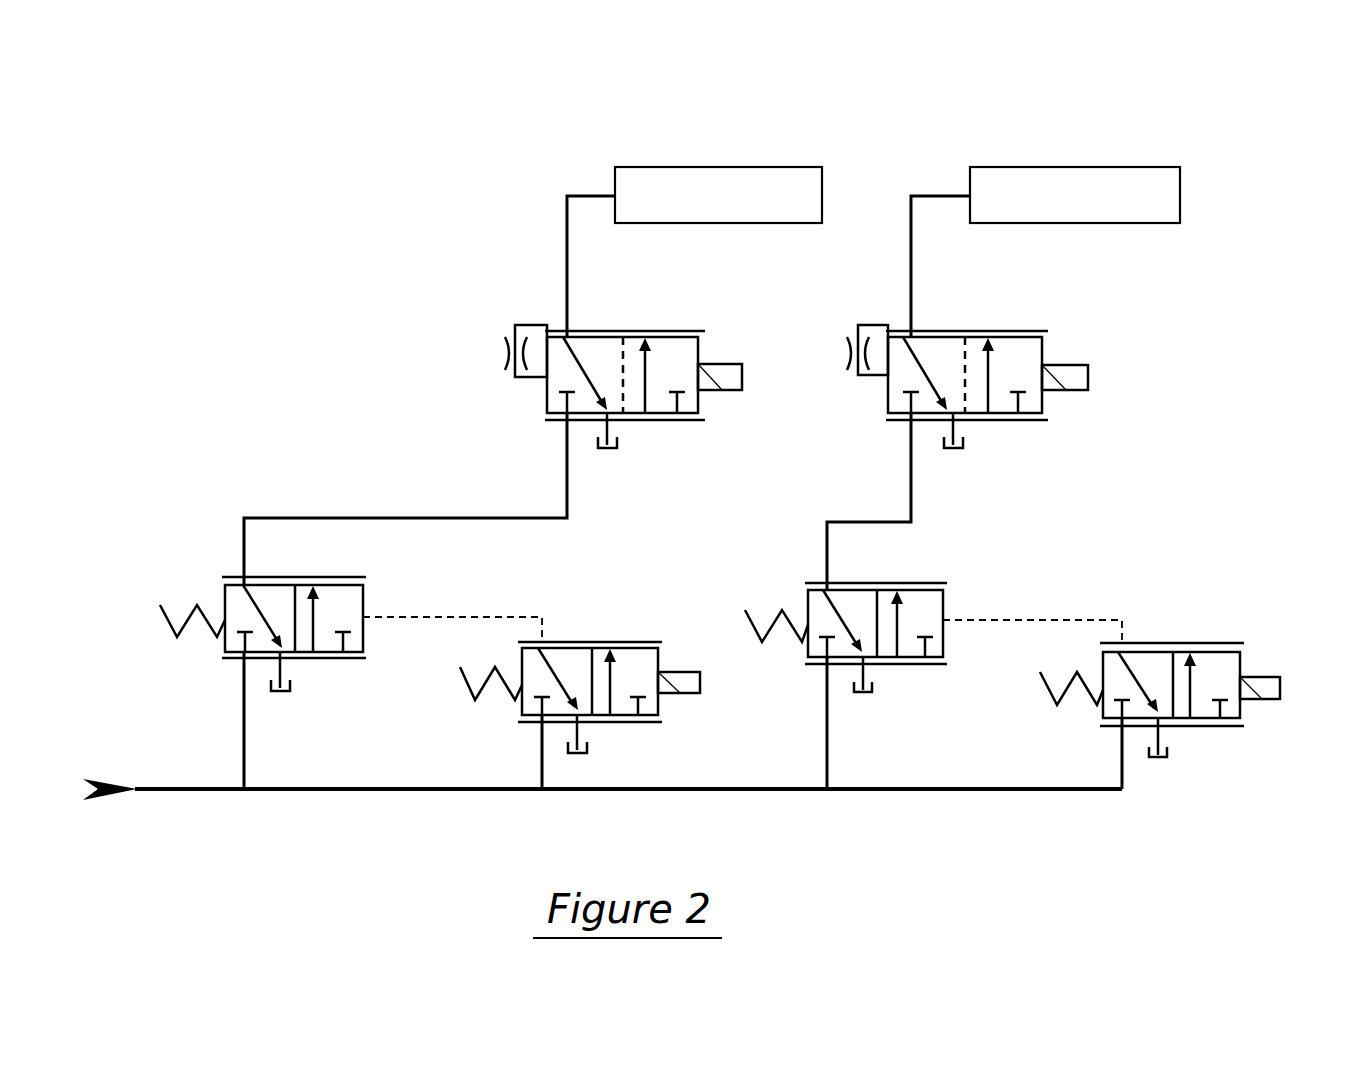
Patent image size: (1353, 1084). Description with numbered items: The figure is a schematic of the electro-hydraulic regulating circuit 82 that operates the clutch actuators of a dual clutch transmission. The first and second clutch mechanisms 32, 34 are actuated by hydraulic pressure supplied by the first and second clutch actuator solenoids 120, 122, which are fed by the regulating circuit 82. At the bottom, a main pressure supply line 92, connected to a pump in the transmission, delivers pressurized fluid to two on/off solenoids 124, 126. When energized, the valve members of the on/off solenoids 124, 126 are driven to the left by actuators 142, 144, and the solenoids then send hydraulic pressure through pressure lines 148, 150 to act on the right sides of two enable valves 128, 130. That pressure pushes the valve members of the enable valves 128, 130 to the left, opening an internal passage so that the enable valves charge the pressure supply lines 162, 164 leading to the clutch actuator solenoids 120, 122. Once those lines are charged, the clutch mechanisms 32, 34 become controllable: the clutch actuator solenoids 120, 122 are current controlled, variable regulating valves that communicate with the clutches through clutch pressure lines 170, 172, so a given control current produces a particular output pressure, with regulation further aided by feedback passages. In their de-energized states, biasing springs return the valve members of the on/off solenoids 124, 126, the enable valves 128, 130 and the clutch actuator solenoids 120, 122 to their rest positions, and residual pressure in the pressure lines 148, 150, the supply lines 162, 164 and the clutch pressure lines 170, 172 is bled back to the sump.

The regulating circuit 82 is at (480, 178).
The first clutch mechanism 32 is at (770, 152).
The second clutch mechanism 34 is at (1133, 143).
The main pressure supply line 92 is at (750, 792).
The first clutch actuator solenoid 120 is at (582, 379).
The second clutch actuator solenoid 122 is at (954, 380).
The first on/off solenoid 124 is at (569, 682).
The second on/off solenoid 126 is at (1150, 686).
The first enable valve 128 is at (269, 663).
The second enable valve 130 is at (853, 663).
The actuator 142 is at (665, 695).
The actuator 144 is at (1250, 700).
The pressure line 148 is at (468, 616).
The pressure line 150 is at (1052, 618).
The pressure supply line 162 is at (528, 515).
The pressure supply line 164 is at (883, 515).
The clutch pressure line 170 is at (572, 273).
The clutch pressure line 172 is at (913, 275).